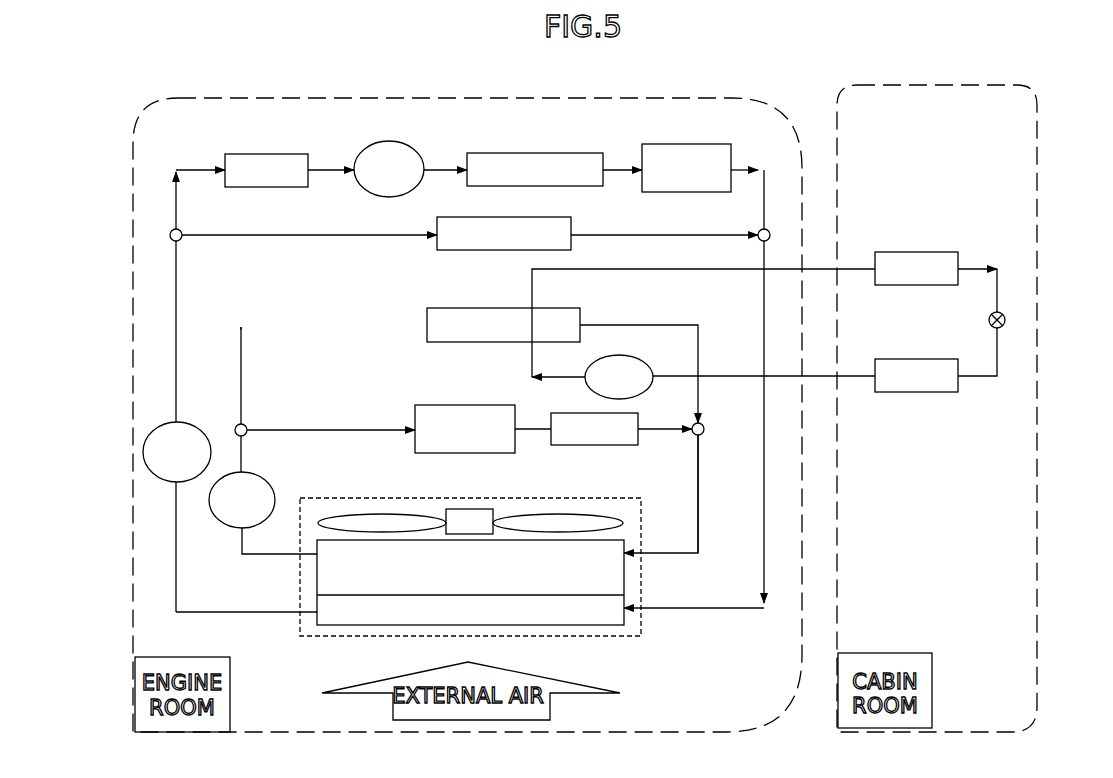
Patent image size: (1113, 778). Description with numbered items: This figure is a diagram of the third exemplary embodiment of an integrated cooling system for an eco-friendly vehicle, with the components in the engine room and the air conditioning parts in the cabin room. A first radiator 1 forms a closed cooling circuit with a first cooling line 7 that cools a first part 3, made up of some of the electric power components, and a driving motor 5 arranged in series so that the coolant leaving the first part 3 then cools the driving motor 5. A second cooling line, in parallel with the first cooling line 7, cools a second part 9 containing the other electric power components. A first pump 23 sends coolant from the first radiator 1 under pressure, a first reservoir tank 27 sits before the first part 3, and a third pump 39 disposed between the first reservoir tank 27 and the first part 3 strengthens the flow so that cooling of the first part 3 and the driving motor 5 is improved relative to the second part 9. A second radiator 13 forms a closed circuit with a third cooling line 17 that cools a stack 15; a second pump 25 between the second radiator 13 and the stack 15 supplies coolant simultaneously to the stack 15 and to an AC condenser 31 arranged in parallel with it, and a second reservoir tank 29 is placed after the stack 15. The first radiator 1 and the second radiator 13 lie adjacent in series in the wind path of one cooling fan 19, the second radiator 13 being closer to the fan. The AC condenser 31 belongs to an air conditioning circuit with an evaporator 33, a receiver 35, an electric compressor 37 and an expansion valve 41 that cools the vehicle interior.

The first radiator 1 is at (329, 612).
The first part 3 is at (533, 153).
The driving motor 5 is at (686, 144).
The first cooling line 7 is at (745, 165).
The second part 9 is at (440, 252).
The second radiator 13 is at (328, 572).
The stack 15 is at (465, 405).
The third cooling line 17 is at (702, 488).
The cooling fan 19 is at (568, 522).
The first pump 23 is at (143, 452).
The second pump 25 is at (275, 480).
The first reservoir tank 27 is at (267, 154).
The second reservoir tank 29 is at (594, 447).
The AC condenser 31 is at (493, 308).
The evaporator 33 is at (915, 395).
The receiver 35 is at (915, 288).
The electric compressor 37 is at (640, 358).
The third pump 39 is at (389, 141).
The expansion valve 41 is at (1005, 318).